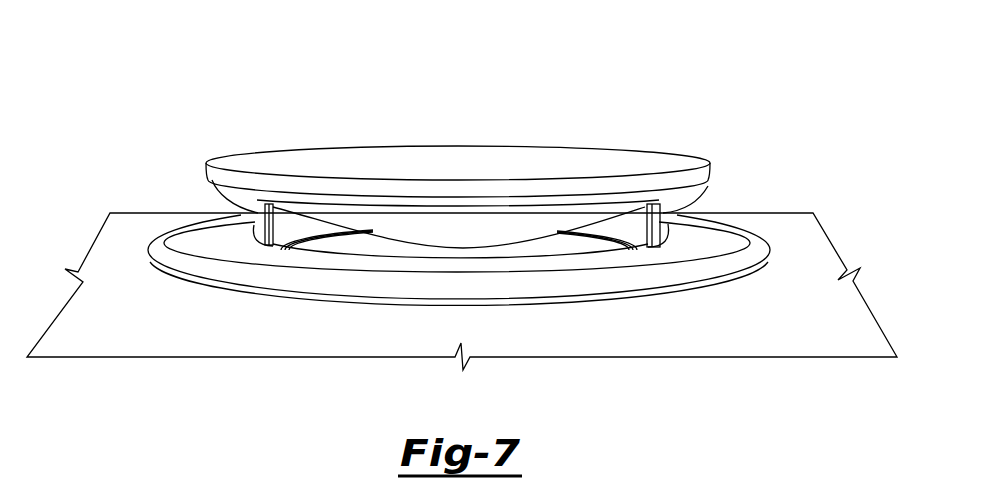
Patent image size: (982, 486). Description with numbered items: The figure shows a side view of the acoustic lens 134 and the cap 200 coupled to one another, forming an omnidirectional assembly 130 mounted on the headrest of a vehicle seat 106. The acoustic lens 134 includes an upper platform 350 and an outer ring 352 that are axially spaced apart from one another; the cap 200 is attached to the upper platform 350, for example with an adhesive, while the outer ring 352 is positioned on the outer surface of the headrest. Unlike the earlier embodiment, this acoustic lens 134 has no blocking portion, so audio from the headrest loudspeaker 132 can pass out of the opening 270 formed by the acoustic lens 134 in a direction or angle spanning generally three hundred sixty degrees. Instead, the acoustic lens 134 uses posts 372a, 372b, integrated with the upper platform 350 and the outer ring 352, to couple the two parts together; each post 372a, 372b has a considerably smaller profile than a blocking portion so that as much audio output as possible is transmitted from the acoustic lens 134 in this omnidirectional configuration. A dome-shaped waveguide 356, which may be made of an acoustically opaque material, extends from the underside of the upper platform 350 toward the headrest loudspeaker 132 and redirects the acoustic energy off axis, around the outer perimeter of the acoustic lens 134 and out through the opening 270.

The vehicle seat 106 is at (787, 337).
The sensor assembly 130 is at (512, 108).
The headrest loudspeaker 132 is at (372, 245).
The acoustic lens 134 is at (700, 178).
The cap 200 is at (293, 167).
The opening 270 is at (636, 207).
The upper platform 350 is at (213, 178).
The outer ring 352 is at (202, 240).
The waveguide 356 is at (465, 237).
The post 372a is at (256, 213).
The post 372b is at (663, 213).